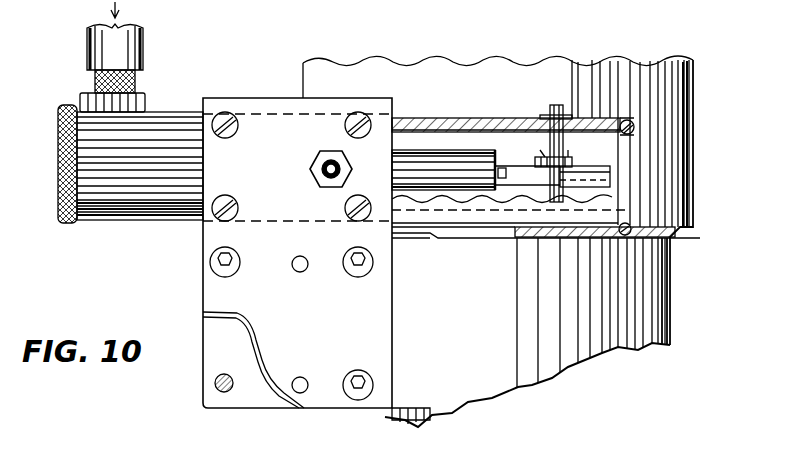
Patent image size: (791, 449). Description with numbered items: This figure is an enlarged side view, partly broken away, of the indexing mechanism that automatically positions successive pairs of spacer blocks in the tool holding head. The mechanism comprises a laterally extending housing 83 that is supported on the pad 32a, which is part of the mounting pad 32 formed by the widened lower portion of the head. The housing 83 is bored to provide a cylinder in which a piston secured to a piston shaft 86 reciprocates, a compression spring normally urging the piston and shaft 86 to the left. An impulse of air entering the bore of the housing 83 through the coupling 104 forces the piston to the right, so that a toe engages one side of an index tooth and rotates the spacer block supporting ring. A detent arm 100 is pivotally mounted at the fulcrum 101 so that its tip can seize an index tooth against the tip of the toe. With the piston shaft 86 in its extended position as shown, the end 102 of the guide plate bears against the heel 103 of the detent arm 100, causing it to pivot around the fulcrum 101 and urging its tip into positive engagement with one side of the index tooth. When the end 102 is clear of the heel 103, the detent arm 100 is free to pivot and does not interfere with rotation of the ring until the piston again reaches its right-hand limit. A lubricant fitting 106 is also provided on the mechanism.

The mounting pad 32 is at (488, 333).
The pad 32a is at (243, 346).
The housing 83 is at (150, 222).
The piston shaft 86 is at (396, 170).
The detent arm 100 is at (614, 172).
The fulcrum 101 is at (548, 110).
The end of the guide plate 102 is at (548, 163).
The heel 103 is at (620, 135).
The coupling 104 is at (108, 52).
The lubricant fitting 106 is at (313, 170).